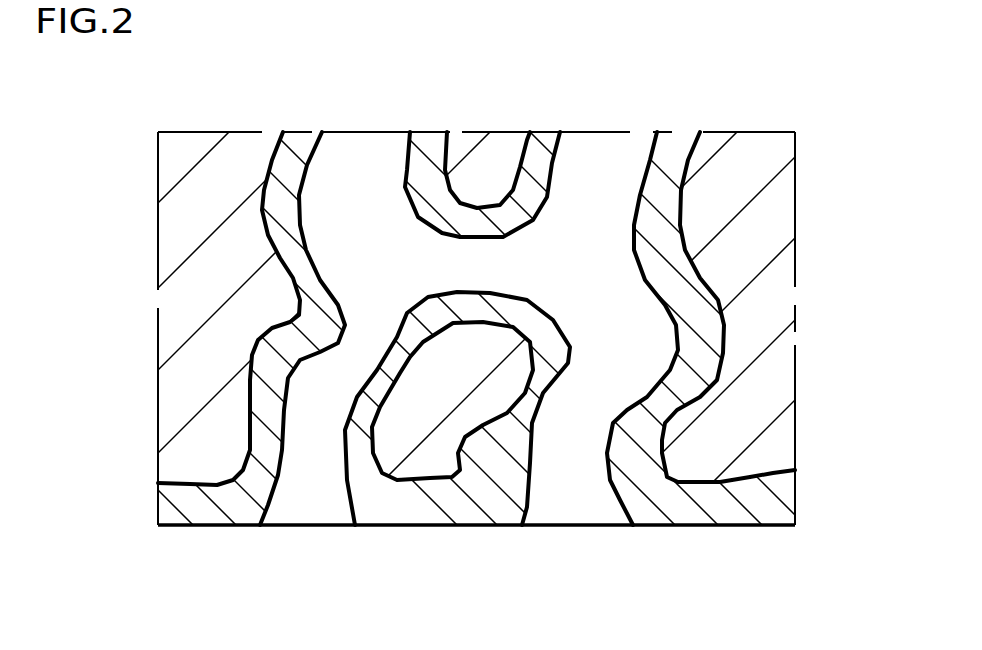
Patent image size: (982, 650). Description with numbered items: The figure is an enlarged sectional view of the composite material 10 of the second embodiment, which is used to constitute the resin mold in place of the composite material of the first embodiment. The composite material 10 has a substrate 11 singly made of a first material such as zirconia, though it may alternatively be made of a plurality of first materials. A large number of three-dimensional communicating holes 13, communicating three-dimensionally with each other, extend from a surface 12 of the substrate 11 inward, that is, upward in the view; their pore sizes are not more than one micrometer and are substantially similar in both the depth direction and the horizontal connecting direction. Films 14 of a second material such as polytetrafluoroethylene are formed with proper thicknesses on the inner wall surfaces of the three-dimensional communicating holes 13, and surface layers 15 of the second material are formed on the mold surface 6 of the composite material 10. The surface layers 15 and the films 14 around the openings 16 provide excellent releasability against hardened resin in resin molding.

The composite material 10 is at (840, 102).
The substrate 11 is at (215, 166).
The surface 12 is at (435, 483).
The three-dimensional communicating holes 13 is at (390, 215).
The films 14 is at (298, 263).
The surface layers 15 is at (380, 525).
The openings 16 is at (360, 532).
The mold surface 6 is at (650, 525).